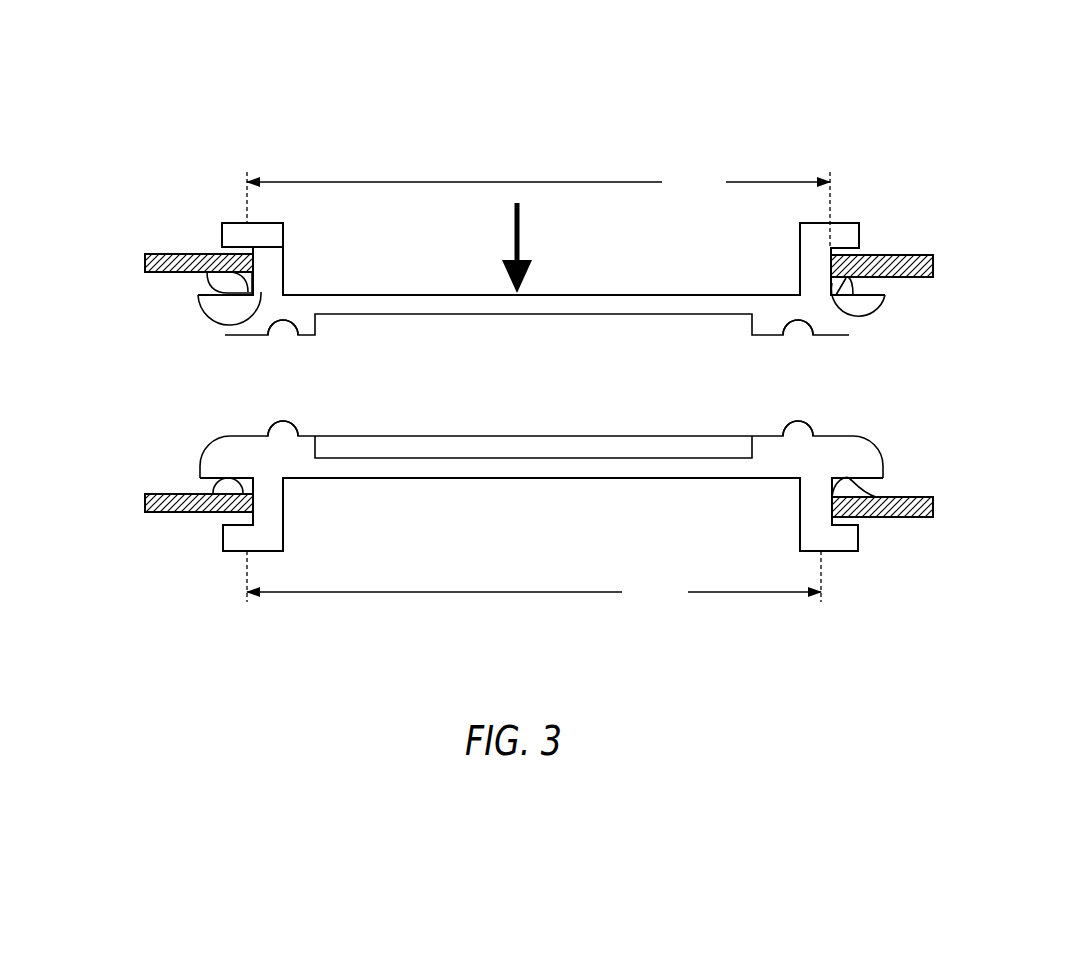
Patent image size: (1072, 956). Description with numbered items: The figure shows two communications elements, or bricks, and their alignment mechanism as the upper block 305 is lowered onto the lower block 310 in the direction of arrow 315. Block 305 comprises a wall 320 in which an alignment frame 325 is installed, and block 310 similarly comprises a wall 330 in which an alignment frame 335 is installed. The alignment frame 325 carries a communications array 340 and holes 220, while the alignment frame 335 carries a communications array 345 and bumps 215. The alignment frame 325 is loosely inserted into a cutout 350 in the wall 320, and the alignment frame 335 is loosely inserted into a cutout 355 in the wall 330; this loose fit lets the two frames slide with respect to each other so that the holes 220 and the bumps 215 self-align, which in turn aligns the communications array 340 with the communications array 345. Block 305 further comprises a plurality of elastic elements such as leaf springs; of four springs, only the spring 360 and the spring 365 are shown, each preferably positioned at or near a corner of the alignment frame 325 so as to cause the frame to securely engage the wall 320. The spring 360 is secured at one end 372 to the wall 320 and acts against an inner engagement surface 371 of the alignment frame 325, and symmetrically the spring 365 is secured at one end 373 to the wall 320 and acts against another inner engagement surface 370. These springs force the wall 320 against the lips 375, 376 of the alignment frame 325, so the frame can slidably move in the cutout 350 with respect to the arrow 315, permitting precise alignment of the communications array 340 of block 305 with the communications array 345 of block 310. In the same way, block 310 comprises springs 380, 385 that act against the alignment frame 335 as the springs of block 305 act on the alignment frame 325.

The block 305 is at (212, 191).
The block 310 is at (229, 565).
The arrow 315 is at (517, 222).
The wall 320 is at (935, 265).
The alignment frame 325 is at (738, 288).
The wall 330 is at (933, 507).
The alignment frame 335 is at (736, 488).
The communications array 340 is at (470, 326).
The communications array 345 is at (548, 447).
The cutout 350 is at (538, 206).
The cutout 355 is at (534, 580).
The spring 360 is at (884, 296).
The spring 365 is at (211, 276).
The inner engagement surface 370 is at (235, 328).
The inner engagement surface 371 is at (845, 318).
The end 372 is at (868, 285).
The end 373 is at (182, 279).
The lip 375 is at (860, 235).
The lip 376 is at (222, 238).
The spring 380 is at (880, 487).
The spring 385 is at (210, 480).
The bumps 215 is at (286, 425).
The holes 220 is at (283, 332).